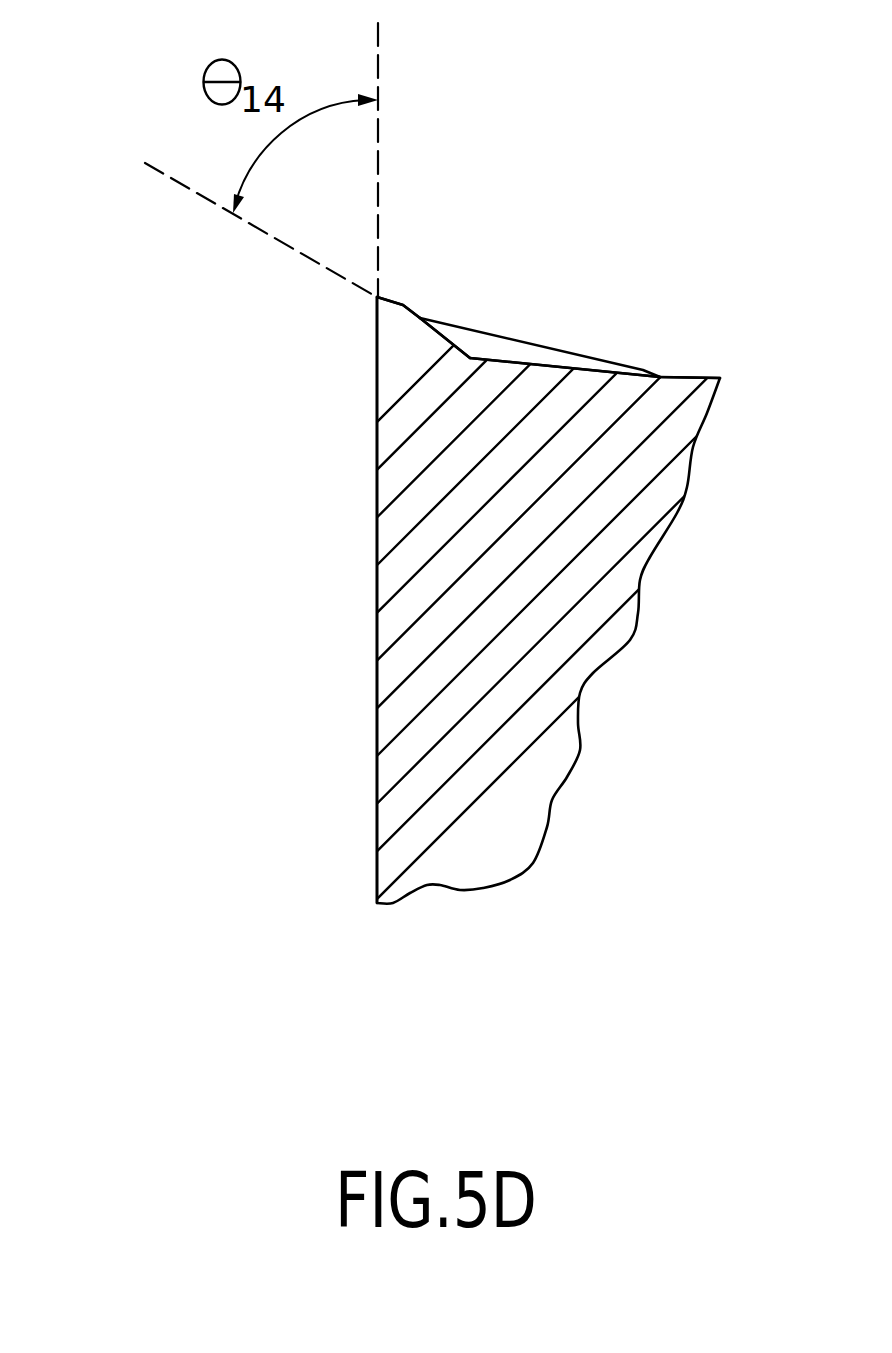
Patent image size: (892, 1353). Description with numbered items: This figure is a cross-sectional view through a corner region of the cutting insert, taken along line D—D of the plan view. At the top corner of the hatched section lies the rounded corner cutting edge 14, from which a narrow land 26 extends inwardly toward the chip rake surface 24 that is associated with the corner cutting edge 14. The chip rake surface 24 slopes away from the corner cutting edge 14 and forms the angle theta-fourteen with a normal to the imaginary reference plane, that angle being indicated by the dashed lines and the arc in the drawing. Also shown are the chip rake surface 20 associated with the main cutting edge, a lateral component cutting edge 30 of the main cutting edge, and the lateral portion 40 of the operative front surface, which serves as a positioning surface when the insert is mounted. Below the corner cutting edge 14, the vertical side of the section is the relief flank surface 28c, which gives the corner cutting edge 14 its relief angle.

The corner cutting edge 14 is at (377, 300).
The chip rake surface 20 is at (497, 348).
The chip rake surface 24 is at (440, 330).
The land 26 is at (393, 298).
The relief flank surface 28c is at (377, 355).
The lateral component cutting edge 30 is at (562, 351).
The lateral portion 40 is at (600, 362).